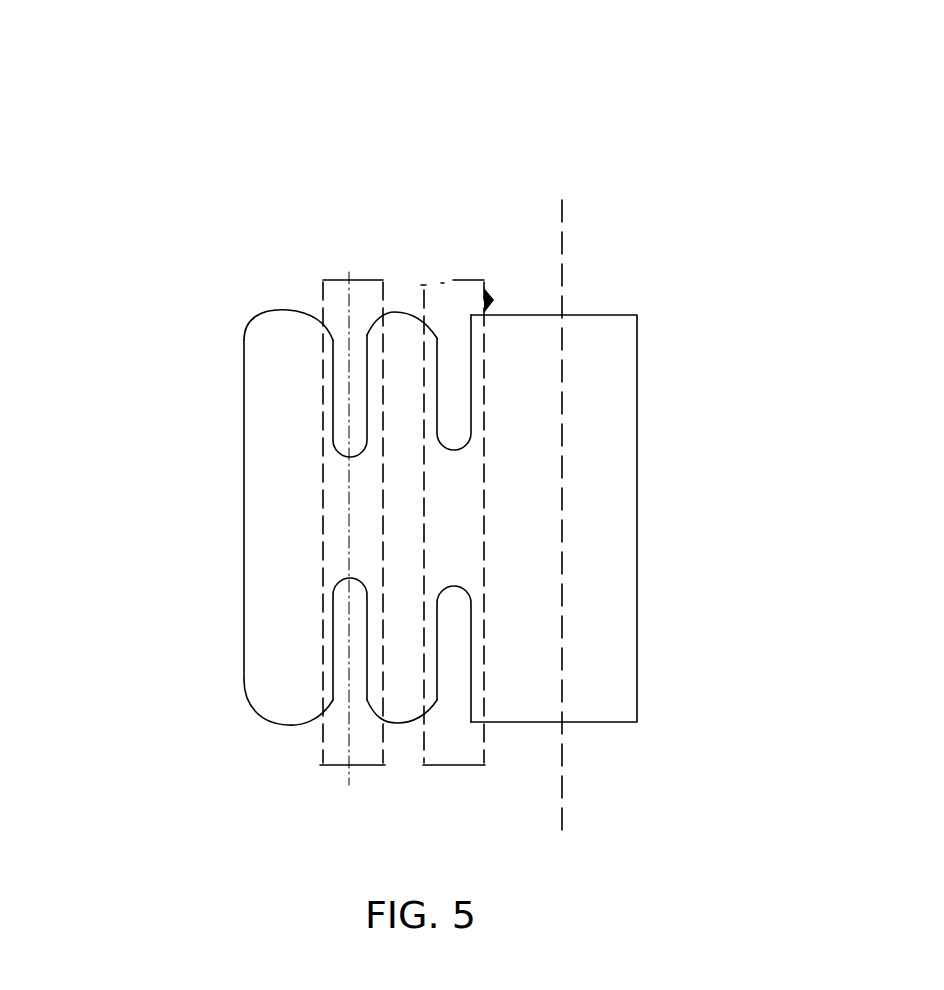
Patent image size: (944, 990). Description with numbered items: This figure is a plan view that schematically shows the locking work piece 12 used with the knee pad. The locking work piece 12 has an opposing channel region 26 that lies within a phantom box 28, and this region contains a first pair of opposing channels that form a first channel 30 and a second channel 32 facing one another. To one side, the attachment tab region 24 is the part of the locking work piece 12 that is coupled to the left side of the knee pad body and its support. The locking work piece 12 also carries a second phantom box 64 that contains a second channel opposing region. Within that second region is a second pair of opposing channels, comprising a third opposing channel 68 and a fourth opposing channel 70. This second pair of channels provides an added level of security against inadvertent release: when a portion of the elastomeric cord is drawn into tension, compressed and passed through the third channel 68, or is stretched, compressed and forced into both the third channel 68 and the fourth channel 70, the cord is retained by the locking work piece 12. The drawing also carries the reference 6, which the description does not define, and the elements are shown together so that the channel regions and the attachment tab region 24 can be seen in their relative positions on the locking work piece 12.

The first bar 6 is at (343, 275).
The locking work piece 12 is at (515, 235).
The attachment tab region 24 is at (598, 482).
The opposing channel region 26 is at (437, 248).
The phantom box 28 is at (430, 282).
The first channel 30 is at (463, 388).
The second channel 32 is at (460, 647).
The second phantom box 64 is at (347, 765).
The third opposing channel 68 is at (347, 393).
The fourth opposing channel 70 is at (343, 650).